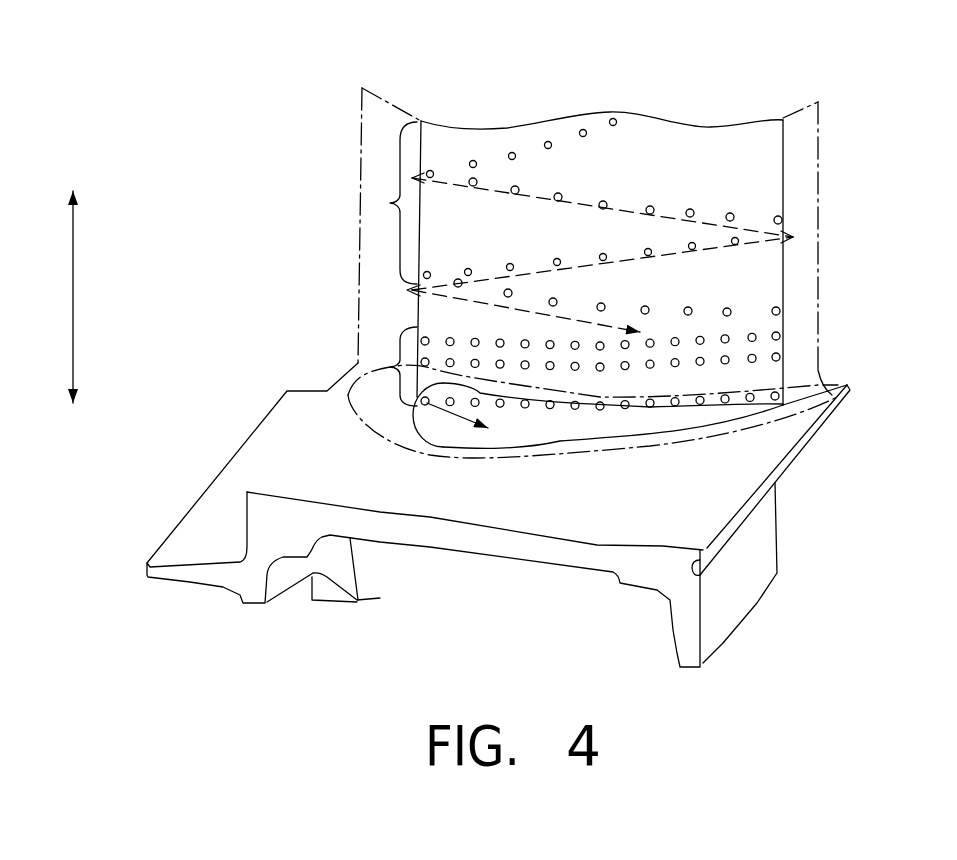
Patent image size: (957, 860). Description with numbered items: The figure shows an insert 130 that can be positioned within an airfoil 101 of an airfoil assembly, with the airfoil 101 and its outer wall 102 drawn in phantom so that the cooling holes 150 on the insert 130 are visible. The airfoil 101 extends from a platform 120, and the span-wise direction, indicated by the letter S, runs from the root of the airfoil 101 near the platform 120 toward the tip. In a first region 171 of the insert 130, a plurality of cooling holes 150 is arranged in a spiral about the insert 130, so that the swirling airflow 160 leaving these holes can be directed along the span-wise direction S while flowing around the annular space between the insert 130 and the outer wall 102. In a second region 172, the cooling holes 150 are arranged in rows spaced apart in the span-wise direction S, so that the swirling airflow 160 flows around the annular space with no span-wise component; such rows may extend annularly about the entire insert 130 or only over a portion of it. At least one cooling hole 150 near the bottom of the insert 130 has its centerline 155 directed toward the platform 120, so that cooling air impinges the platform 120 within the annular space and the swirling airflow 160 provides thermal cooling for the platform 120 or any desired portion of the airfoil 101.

The airfoil 101 is at (335, 92).
The outer wall 102 is at (823, 217).
The platform 120 is at (302, 482).
The insert 130 is at (763, 148).
The cooling holes 150 is at (608, 197).
The centerline 155 is at (460, 422).
The swirling airflow 160 is at (445, 188).
The first region 171 is at (390, 203).
The second region 172 is at (390, 367).
The span-wise direction S is at (73, 283).